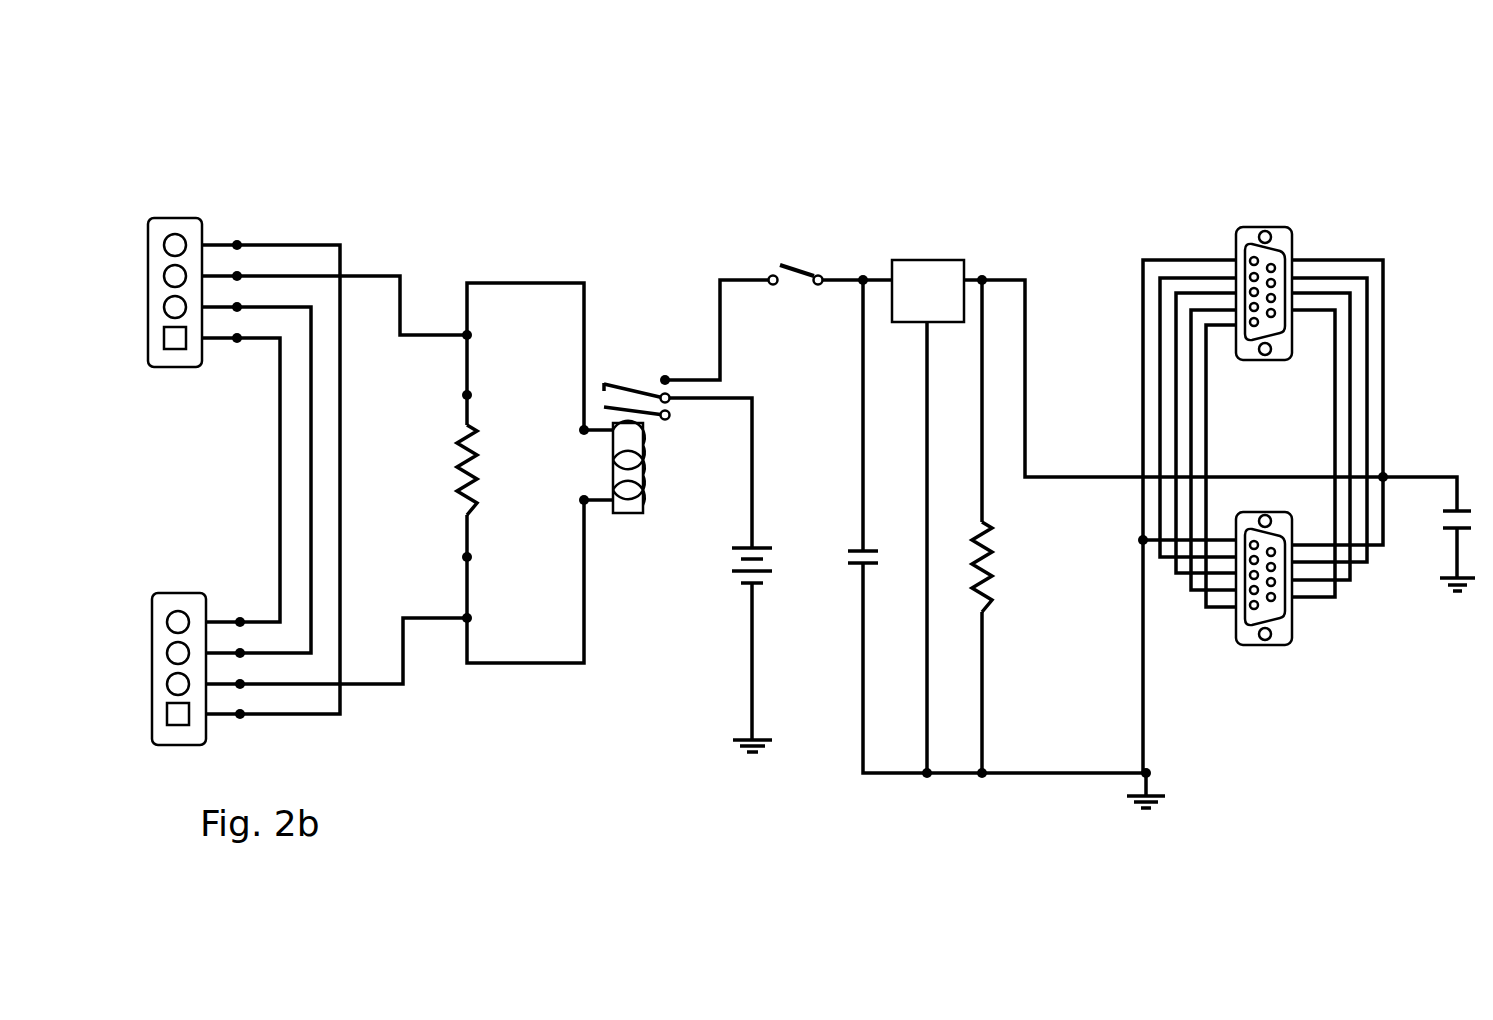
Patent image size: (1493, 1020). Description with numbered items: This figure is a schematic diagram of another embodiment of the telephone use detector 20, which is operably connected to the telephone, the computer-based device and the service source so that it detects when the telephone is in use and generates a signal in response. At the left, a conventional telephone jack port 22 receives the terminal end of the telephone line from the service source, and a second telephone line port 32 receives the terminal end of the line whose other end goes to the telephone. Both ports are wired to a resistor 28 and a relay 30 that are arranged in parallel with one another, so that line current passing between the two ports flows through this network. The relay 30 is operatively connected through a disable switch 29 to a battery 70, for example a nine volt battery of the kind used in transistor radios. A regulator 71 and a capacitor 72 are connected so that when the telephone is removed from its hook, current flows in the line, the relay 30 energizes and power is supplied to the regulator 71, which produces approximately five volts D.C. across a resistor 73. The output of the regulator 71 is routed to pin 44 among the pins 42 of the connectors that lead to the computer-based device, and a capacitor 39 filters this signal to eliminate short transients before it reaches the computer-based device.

The telephone use detector 20 is at (472, 238).
The telephone jack port 22 is at (171, 224).
The resistor 28 is at (457, 460).
The disable switch 29 is at (798, 266).
The relay 30 is at (692, 415).
The telephone line port 32 is at (172, 600).
The capacitor 39 is at (1446, 532).
The pins 42 is at (1250, 246).
The pin 44 is at (1275, 265).
The battery 70 is at (757, 536).
The regulator 71 is at (928, 291).
The capacitor 72 is at (850, 567).
The resistor 73 is at (995, 600).